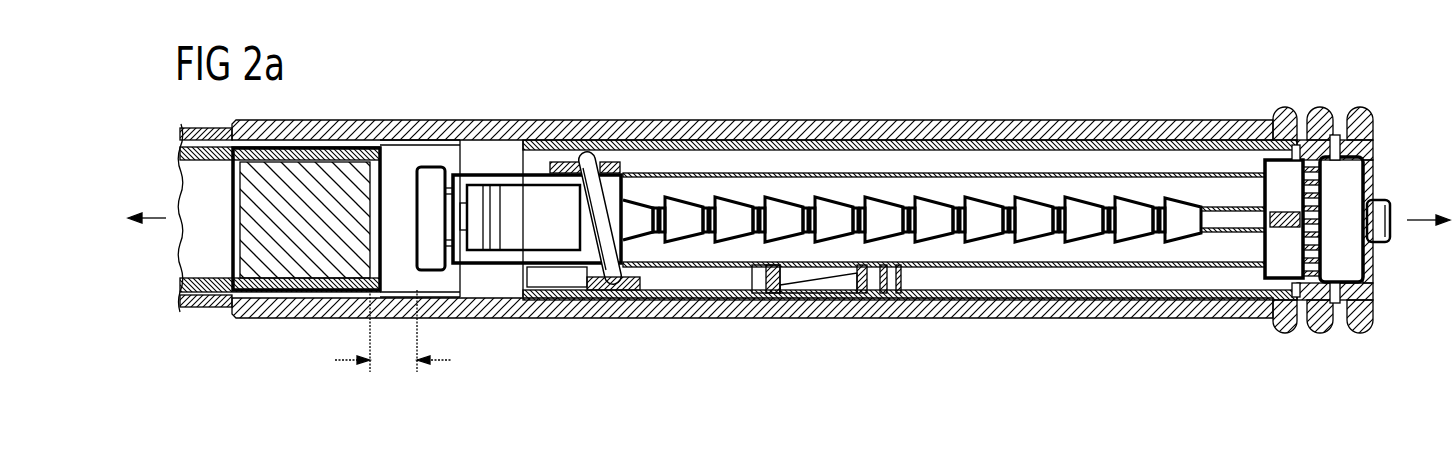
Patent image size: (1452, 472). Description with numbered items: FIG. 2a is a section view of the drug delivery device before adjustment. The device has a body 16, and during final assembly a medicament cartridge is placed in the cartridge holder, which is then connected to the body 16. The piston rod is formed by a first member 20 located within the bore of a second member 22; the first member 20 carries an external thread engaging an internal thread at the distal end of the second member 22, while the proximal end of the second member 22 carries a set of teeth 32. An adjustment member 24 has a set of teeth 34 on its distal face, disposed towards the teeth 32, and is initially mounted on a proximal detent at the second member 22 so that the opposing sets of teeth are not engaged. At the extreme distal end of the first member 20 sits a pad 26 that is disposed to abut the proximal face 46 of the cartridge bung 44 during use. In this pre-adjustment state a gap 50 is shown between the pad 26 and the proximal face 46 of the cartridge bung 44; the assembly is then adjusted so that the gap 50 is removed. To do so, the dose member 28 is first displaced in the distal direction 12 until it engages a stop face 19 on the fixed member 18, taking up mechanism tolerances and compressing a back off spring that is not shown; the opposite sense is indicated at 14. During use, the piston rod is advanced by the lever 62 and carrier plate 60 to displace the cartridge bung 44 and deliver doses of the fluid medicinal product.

The distal direction 12 is at (163, 214).
The distal direction 14 is at (1418, 218).
The body 16 is at (767, 318).
The fixed member 18 is at (688, 278).
The stop face 19 is at (886, 318).
The first member 20 is at (1383, 200).
The second member 22 is at (1056, 248).
The adjustment member 24 is at (1340, 263).
The pad 26 is at (428, 175).
The dose member 28 is at (1279, 120).
The teeth 32 is at (1268, 222).
The teeth 34 is at (1297, 210).
The cartridge bung 44 is at (233, 216).
The proximal face 46 is at (378, 172).
The gap 50 is at (393, 334).
The carrier plate 60 is at (518, 197).
The lever 62 is at (607, 298).